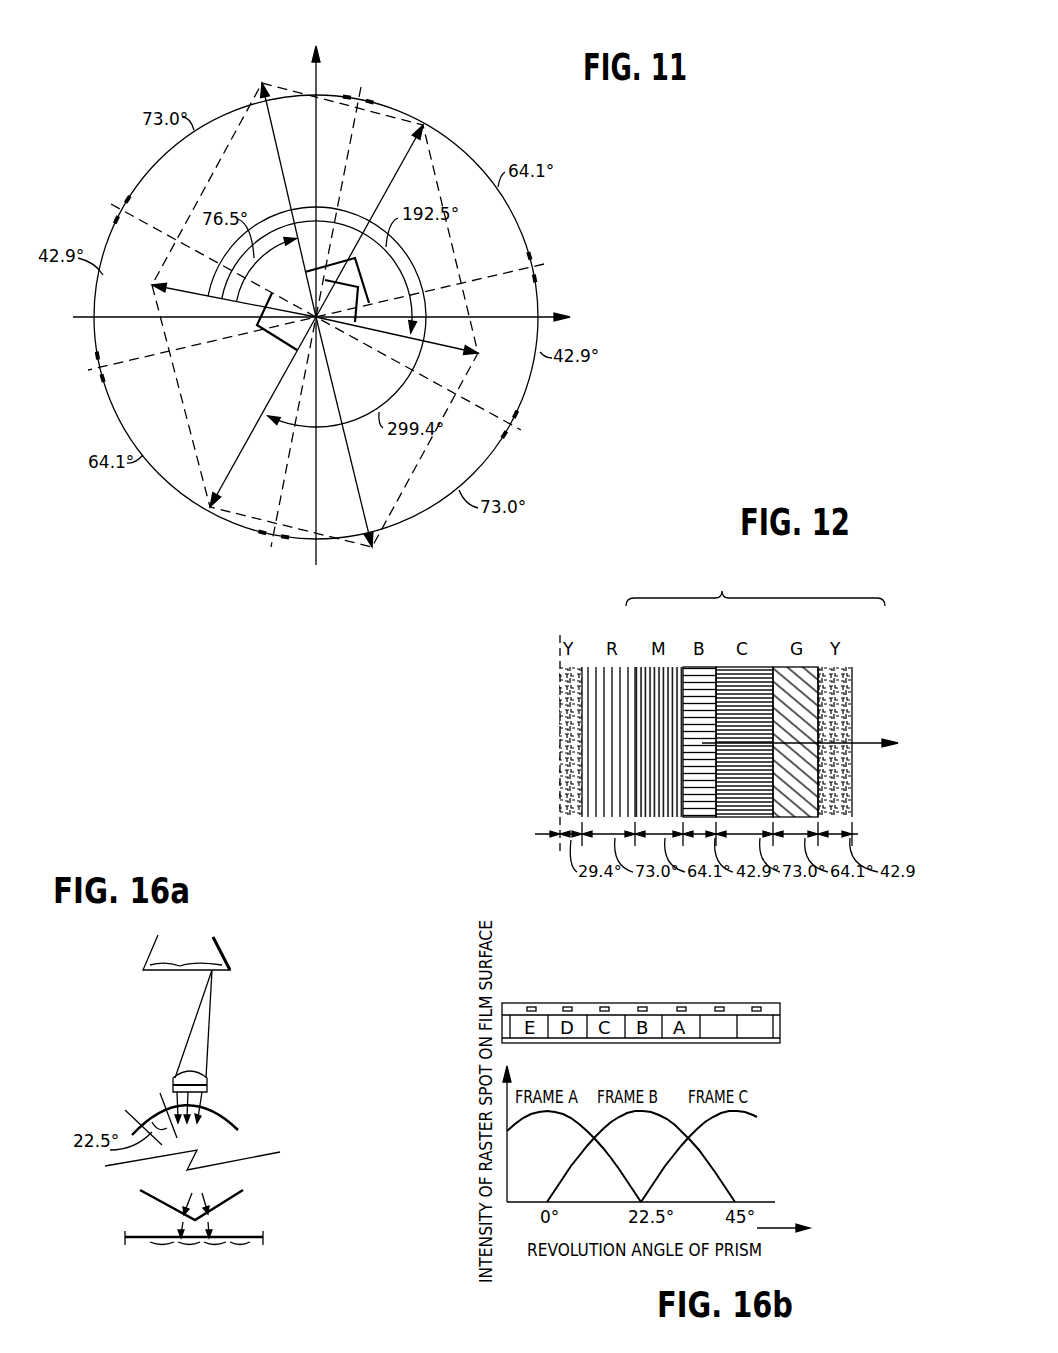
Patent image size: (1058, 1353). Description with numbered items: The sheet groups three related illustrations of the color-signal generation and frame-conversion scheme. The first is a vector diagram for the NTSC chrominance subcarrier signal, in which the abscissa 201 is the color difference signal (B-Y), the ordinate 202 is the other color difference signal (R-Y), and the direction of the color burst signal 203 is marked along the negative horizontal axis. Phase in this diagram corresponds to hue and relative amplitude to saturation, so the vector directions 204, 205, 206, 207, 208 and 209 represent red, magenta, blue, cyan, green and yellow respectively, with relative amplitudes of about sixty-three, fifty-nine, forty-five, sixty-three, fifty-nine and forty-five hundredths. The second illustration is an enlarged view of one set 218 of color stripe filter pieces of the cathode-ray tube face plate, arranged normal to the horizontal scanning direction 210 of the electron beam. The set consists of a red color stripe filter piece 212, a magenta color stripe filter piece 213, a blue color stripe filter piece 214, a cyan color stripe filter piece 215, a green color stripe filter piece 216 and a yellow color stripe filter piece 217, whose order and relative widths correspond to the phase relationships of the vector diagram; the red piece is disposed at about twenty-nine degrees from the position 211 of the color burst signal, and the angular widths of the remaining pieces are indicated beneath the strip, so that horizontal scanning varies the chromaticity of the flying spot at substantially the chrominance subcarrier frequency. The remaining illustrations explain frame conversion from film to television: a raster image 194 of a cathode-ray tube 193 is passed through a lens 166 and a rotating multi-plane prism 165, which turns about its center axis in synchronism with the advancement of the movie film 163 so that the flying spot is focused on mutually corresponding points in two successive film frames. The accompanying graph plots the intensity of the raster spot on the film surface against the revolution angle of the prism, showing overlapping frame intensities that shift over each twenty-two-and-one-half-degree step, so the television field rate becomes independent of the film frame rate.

In FIG. 11, the abscissa 201 is at (548, 312).
In FIG. 11, the ordinate 202 is at (313, 64).
In FIG. 11, the direction of the color burst signal 203 is at (75, 322).
In FIG. 11, the red vector direction 204 is at (281, 174).
In FIG. 11, the magenta vector direction 205 is at (403, 163).
In FIG. 11, the blue vector direction 206 is at (455, 350).
In FIG. 11, the cyan vector direction 207 is at (362, 505).
In FIG. 11, the green vector direction 208 is at (243, 452).
In FIG. 11, the yellow vector direction 209 is at (204, 293).
In FIG. 12, the horizontal scanning direction 210 is at (868, 742).
In FIG. 12, the position of the color burst signal 211 is at (560, 697).
In FIG. 12, the red color stripe filter piece 212 is at (619, 682).
In FIG. 12, the magenta color stripe filter piece 213 is at (665, 682).
In FIG. 12, the blue color stripe filter piece 214 is at (704, 686).
In FIG. 12, the cyan color stripe filter piece 215 is at (757, 686).
In FIG. 12, the green color stripe filter piece 216 is at (808, 686).
In FIG. 12, the yellow color stripe filter piece 217 is at (845, 682).
In FIG. 12, the set of color stripe filter pieces 218 is at (755, 585).
In FIG. 16a, the cathode-ray tube 193 is at (222, 947).
In FIG. 16a, the raster image 194 is at (186, 951).
In FIG. 16a, the lens 166 is at (209, 1082).
In FIG. 16a, the multi-plane prism 165 is at (233, 1124).
In FIG. 16a, the movie film 163 is at (255, 1243).